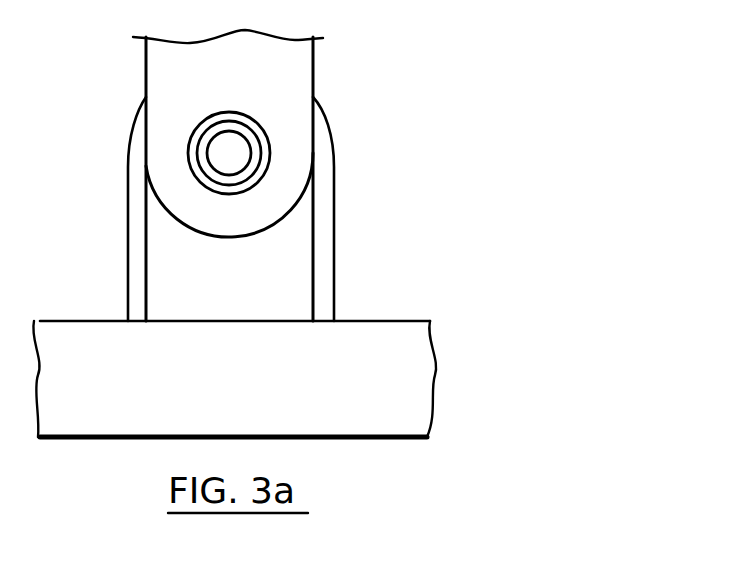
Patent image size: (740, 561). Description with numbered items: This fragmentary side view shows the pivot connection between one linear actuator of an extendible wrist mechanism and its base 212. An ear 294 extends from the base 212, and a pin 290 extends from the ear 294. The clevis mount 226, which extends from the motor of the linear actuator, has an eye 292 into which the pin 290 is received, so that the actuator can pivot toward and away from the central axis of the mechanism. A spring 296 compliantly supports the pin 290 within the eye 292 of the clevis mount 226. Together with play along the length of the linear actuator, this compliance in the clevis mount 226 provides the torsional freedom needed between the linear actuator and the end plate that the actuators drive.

The base 212 is at (263, 398).
The clevis mount 226 is at (287, 75).
The pin 290 is at (229, 153).
The eye 292 is at (242, 120).
The ear 294 is at (148, 250).
The spring 296 is at (197, 165).